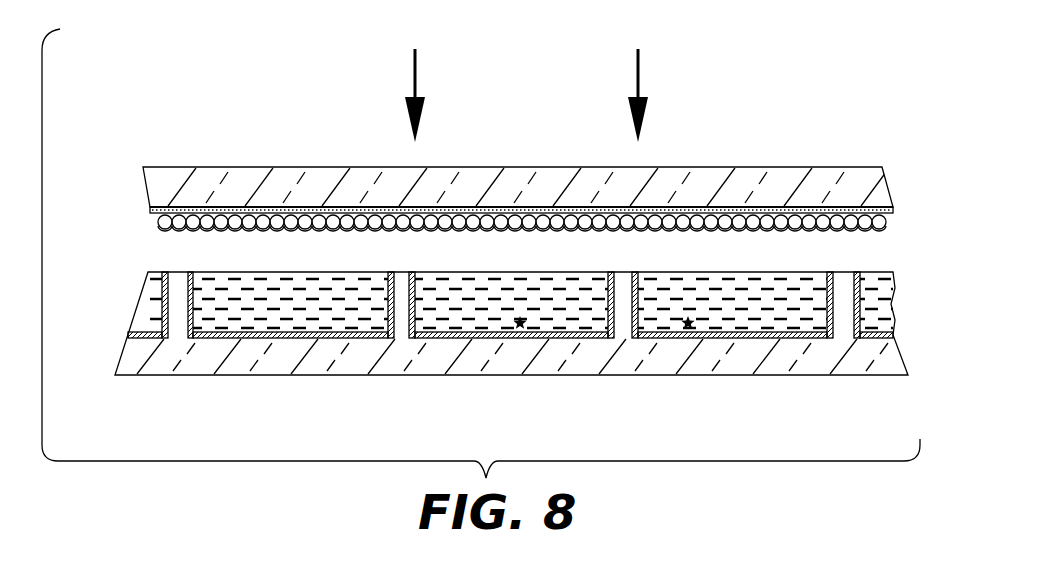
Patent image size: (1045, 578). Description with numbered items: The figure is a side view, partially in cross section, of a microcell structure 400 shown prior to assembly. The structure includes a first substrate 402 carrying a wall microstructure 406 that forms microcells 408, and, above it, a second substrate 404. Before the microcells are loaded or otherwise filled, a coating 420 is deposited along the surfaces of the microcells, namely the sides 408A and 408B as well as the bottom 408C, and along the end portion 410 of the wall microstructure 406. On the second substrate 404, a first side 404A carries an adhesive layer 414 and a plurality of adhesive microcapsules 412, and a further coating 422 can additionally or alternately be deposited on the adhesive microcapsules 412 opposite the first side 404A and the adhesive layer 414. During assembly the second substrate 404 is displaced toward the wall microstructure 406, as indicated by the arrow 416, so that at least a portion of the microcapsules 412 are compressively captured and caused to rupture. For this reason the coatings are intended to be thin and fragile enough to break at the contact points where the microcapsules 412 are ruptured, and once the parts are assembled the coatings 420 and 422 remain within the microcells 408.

The microcell structure 400 is at (217, 124).
The first substrate 402 is at (780, 362).
The second substrate 404 is at (162, 167).
The first side 404A is at (320, 207).
The wall microstructure 406 is at (401, 305).
The microcells 408 is at (688, 330).
The side of microcell 408A is at (180, 322).
The side of microcell 408B is at (186, 322).
The bottom of microcell 408C is at (145, 336).
The end portion of wall microstructure 410 is at (166, 343).
The adhesive microcapsules 412 is at (165, 228).
The adhesive layer 414 is at (152, 211).
The arrow 416 is at (416, 80).
The coating 420 is at (628, 307).
The coating 422 is at (547, 230).